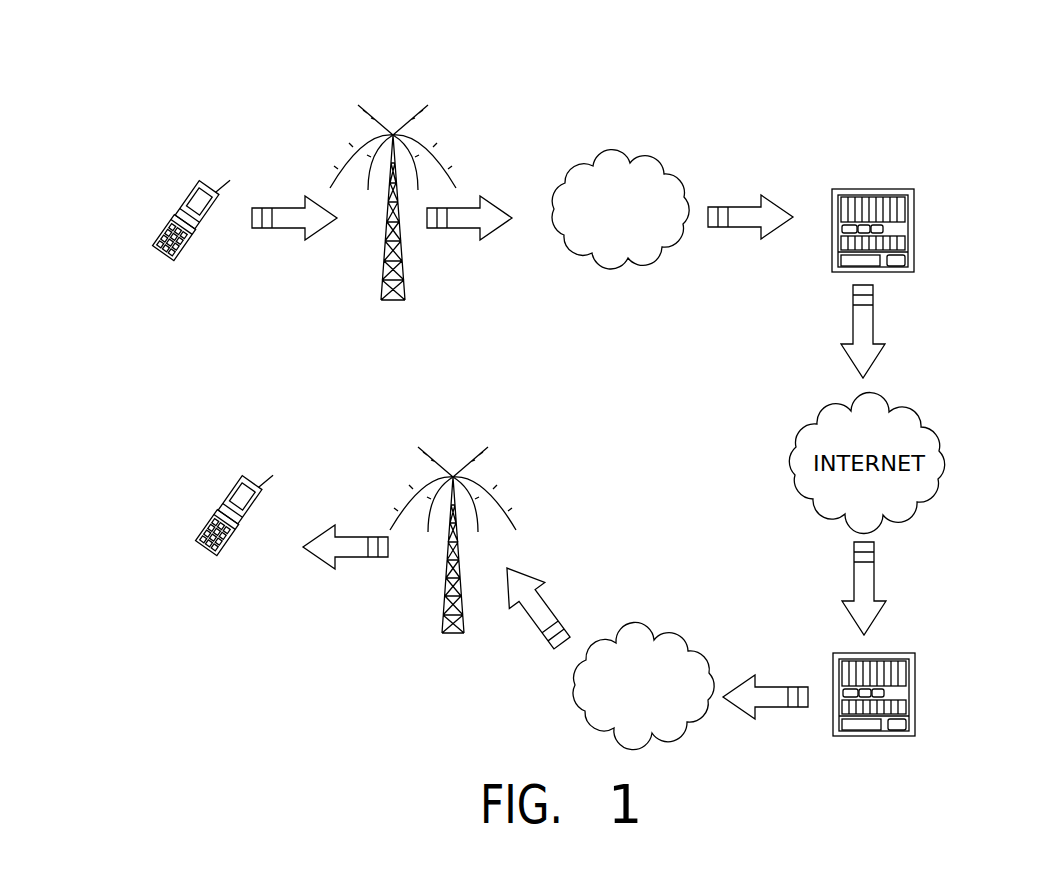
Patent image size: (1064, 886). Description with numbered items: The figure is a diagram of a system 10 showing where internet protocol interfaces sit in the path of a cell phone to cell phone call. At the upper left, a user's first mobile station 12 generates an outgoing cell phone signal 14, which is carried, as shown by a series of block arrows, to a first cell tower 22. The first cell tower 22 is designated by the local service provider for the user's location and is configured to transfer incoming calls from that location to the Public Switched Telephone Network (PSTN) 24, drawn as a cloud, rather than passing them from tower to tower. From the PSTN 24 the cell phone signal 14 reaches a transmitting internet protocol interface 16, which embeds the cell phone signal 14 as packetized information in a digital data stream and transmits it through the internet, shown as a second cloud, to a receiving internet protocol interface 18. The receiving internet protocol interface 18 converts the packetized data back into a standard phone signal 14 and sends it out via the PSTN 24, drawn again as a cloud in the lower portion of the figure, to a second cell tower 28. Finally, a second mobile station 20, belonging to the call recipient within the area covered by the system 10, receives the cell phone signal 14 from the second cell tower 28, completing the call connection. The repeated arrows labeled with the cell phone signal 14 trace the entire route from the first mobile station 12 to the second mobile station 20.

The system 10 is at (183, 112).
The first mobile station 12 is at (175, 228).
The cell phone signal 14 is at (307, 207).
The transmitting internet protocol interface 16 is at (870, 190).
The receiving internet protocol interface 18 is at (915, 685).
The second mobile station 20 is at (222, 525).
The first cell tower 22 is at (384, 278).
The Public Switched Telephone Network (PSTN) 24 is at (618, 160).
The second cell tower 28 is at (445, 610).